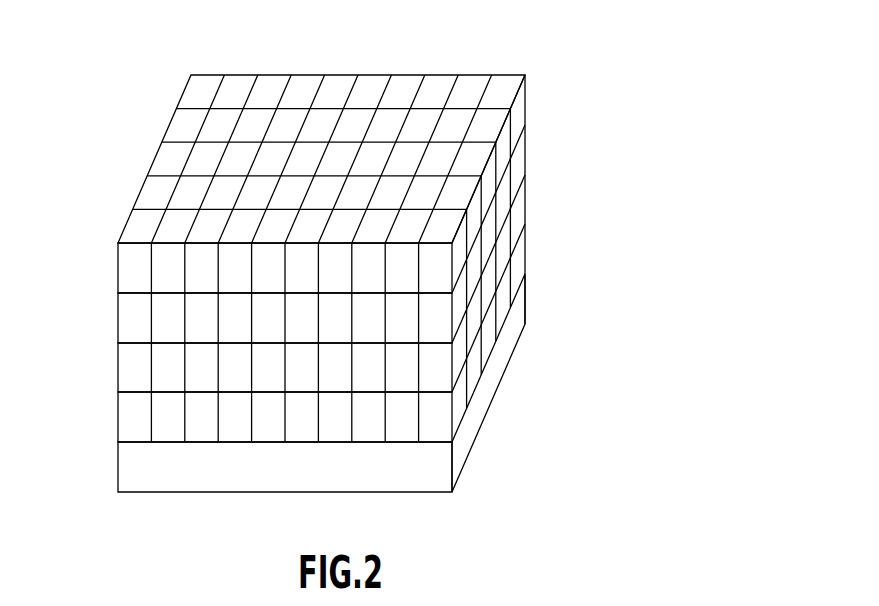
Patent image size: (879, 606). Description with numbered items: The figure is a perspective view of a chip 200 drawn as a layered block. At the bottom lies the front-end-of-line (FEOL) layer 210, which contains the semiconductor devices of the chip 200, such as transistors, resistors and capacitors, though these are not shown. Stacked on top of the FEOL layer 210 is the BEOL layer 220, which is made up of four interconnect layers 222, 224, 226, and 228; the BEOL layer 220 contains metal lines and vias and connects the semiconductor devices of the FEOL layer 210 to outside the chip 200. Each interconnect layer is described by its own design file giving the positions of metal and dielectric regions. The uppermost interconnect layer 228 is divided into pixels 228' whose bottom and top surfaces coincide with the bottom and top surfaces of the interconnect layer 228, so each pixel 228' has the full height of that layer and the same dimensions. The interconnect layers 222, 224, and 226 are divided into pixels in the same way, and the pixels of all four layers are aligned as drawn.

The chip 200 is at (650, 70).
The front-end-of-line (FEOL) layer 210 is at (135, 479).
The BEOL layer 220 is at (533, 277).
The interconnect layer 222 is at (112, 392).
The interconnect layer 224 is at (112, 343).
The interconnect layer 226 is at (112, 293).
The interconnect layer 228 is at (288, 184).
The pixels 228' is at (287, 159).